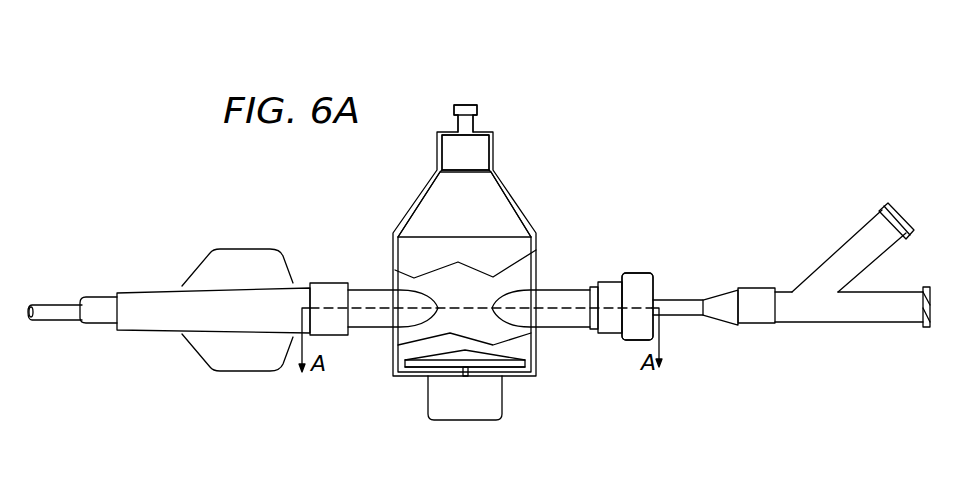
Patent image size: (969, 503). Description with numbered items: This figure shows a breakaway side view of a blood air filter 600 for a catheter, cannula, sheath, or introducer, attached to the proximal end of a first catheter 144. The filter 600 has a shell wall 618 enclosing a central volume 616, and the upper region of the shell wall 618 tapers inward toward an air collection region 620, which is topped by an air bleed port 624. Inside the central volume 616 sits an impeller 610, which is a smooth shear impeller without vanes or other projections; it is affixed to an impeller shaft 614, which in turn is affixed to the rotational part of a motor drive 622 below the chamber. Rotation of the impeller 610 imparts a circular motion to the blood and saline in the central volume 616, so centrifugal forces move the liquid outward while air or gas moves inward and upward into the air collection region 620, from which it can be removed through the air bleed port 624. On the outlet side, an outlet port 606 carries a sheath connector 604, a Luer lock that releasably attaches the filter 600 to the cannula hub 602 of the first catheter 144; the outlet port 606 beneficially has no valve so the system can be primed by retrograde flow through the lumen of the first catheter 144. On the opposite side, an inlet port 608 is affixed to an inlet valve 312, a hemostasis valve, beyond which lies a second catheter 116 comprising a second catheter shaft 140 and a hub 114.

The blood air filter 600 is at (388, 195).
The cannula hub 602 is at (243, 297).
The sheath connector 604 is at (339, 303).
The outlet port 606 is at (393, 312).
The inlet port 608 is at (563, 312).
The impeller 610 is at (428, 365).
The impeller shaft 614 is at (465, 373).
The central volume 616 is at (477, 213).
The shell wall 618 is at (537, 358).
The air collection region 620 is at (477, 153).
The motor drive 622 is at (477, 405).
The air bleed port 624 is at (467, 105).
The first catheter 144 is at (103, 313).
The second catheter shaft 140 is at (55, 313).
The second catheter 116 is at (673, 308).
The hub 114 is at (857, 253).
The inlet valve 312 is at (640, 323).